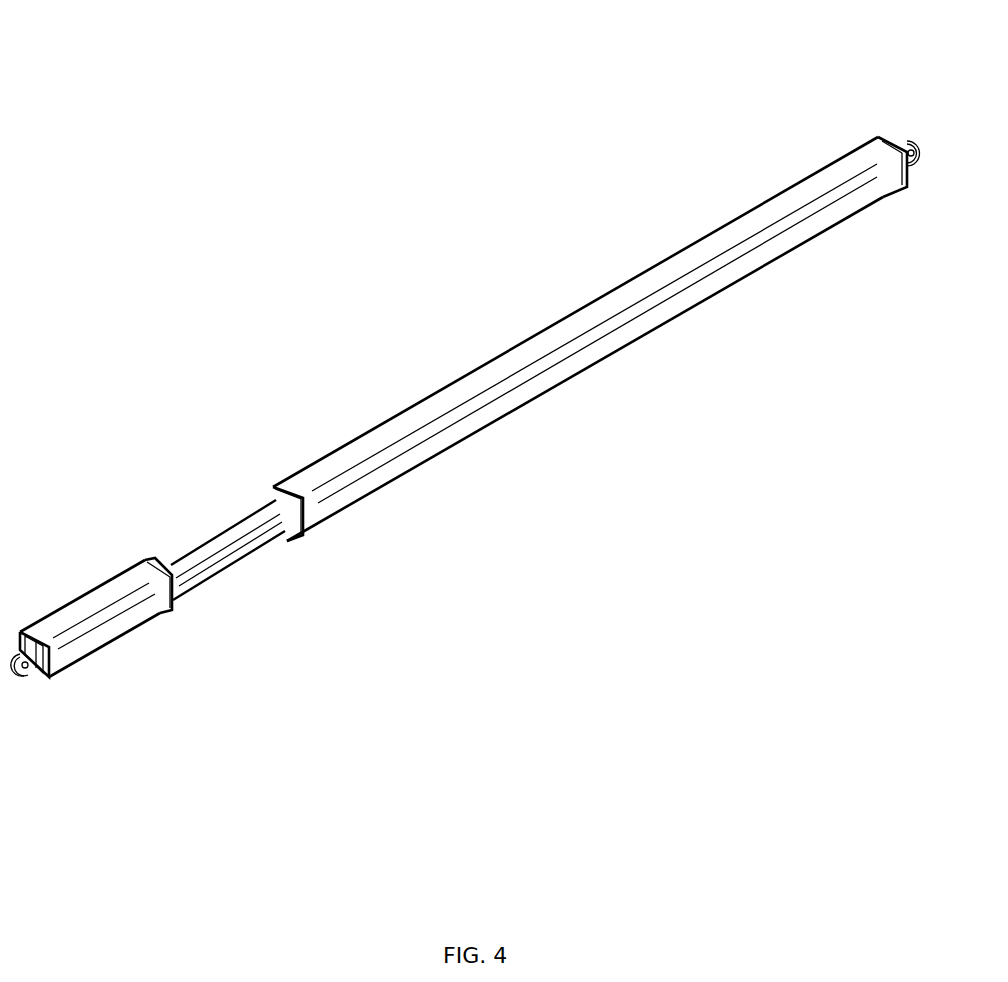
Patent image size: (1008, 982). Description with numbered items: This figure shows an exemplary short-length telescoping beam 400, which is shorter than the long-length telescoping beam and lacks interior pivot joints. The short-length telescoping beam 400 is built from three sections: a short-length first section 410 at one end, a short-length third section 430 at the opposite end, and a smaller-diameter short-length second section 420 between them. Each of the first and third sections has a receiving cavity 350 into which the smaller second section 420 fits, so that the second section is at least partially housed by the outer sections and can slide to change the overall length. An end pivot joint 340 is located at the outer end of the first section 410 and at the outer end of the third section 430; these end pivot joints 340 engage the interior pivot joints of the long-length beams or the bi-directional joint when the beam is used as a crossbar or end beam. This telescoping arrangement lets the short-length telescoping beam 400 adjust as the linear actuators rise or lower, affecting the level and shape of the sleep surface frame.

The short-length telescoping beam 400 is at (430, 337).
The short-length first section 410 is at (653, 267).
The short-length second section 420 is at (245, 560).
The short-length third section 430 is at (88, 592).
The receiving cavity 350 is at (286, 493).
The end pivot joint 340 is at (905, 150).